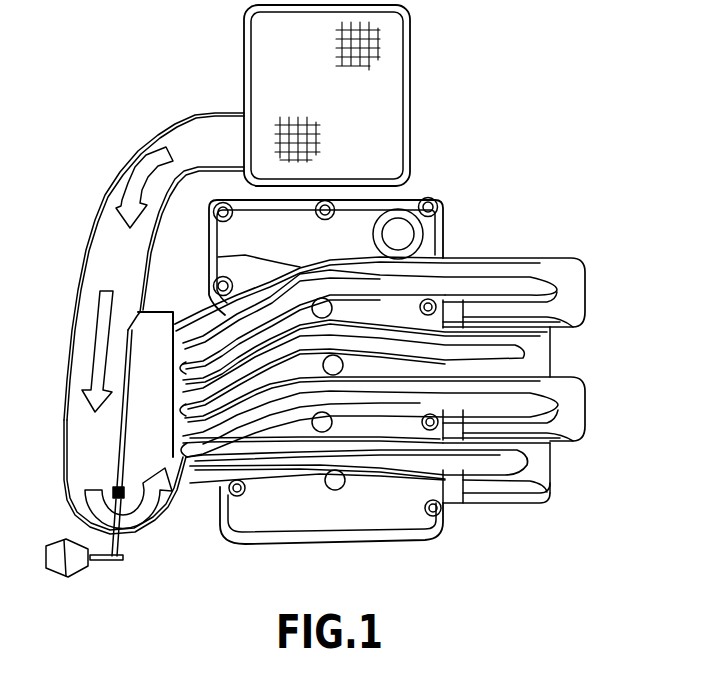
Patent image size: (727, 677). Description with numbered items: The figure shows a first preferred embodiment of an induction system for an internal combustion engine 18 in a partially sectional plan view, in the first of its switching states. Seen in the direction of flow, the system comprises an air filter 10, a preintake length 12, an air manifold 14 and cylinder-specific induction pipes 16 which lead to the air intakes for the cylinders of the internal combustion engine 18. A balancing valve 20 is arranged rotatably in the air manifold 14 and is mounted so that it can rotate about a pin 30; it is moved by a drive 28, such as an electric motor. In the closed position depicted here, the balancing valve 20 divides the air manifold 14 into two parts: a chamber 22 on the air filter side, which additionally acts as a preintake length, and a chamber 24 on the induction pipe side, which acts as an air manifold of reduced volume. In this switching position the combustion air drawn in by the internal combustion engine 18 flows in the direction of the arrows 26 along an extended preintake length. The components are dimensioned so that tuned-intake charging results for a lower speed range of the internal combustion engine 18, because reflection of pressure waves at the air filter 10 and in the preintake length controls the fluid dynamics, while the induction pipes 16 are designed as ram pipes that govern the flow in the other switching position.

The air filter 10 is at (247, 68).
The preintake length 12 is at (105, 228).
The air manifold 14 is at (71, 333).
The induction pipes 16 is at (278, 296).
The internal combustion engine 18 is at (247, 211).
The balancing valve 20 is at (118, 430).
The chamber 22 is at (72, 438).
The chamber 24 is at (150, 340).
The arrows 26 is at (146, 174).
The drive 28 is at (70, 572).
The pin 30 is at (128, 548).